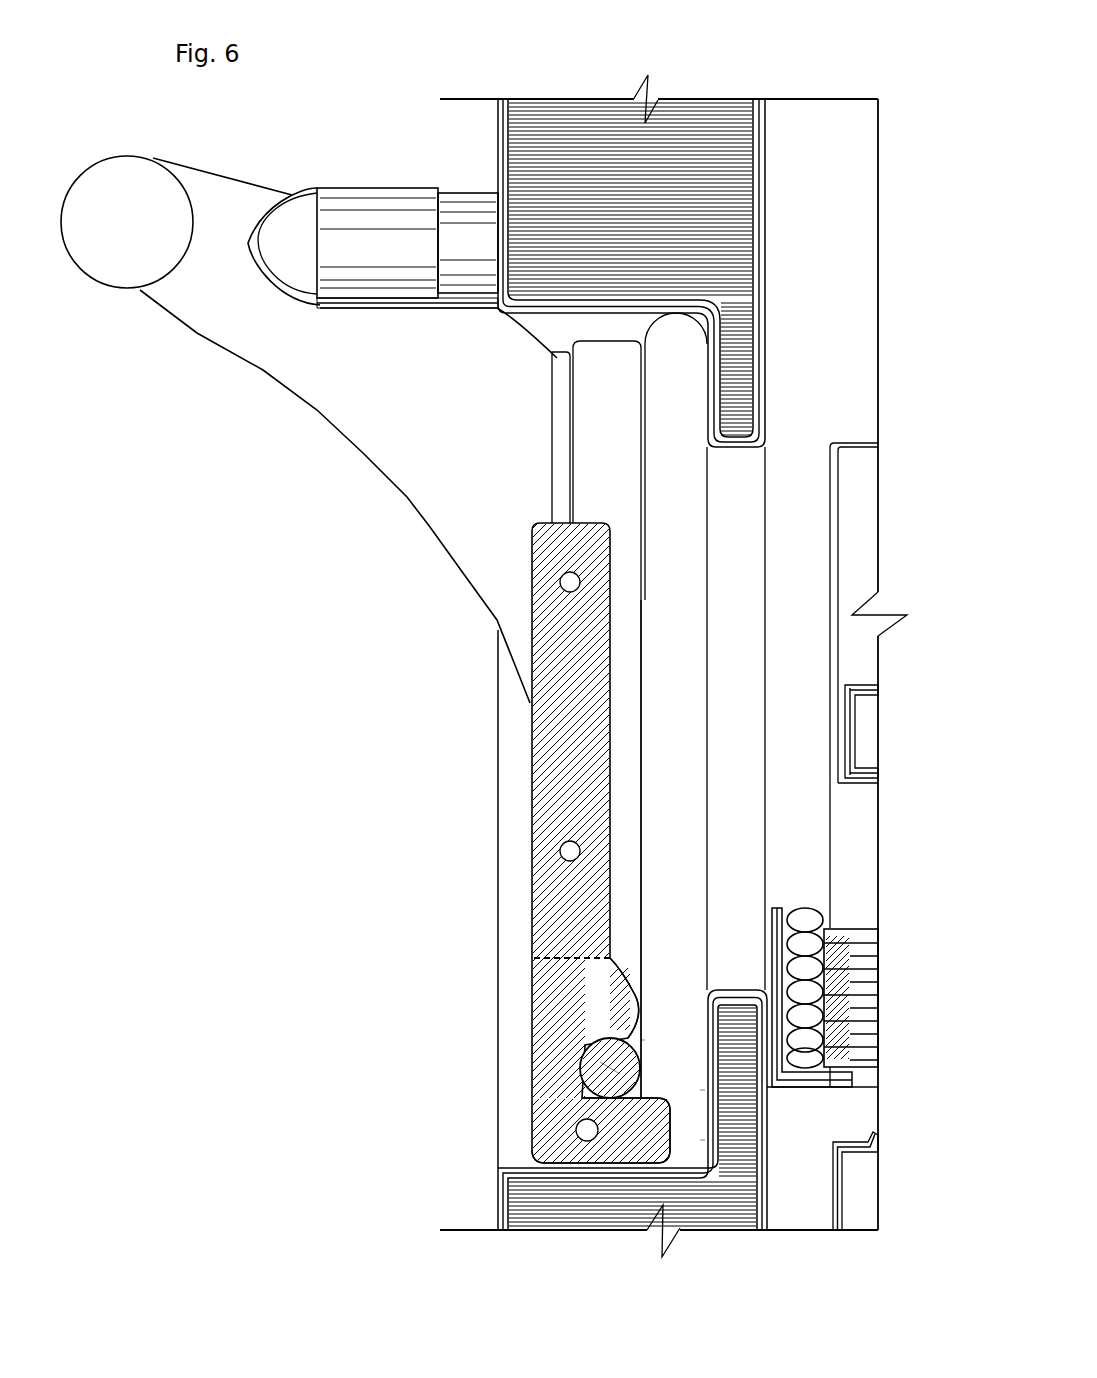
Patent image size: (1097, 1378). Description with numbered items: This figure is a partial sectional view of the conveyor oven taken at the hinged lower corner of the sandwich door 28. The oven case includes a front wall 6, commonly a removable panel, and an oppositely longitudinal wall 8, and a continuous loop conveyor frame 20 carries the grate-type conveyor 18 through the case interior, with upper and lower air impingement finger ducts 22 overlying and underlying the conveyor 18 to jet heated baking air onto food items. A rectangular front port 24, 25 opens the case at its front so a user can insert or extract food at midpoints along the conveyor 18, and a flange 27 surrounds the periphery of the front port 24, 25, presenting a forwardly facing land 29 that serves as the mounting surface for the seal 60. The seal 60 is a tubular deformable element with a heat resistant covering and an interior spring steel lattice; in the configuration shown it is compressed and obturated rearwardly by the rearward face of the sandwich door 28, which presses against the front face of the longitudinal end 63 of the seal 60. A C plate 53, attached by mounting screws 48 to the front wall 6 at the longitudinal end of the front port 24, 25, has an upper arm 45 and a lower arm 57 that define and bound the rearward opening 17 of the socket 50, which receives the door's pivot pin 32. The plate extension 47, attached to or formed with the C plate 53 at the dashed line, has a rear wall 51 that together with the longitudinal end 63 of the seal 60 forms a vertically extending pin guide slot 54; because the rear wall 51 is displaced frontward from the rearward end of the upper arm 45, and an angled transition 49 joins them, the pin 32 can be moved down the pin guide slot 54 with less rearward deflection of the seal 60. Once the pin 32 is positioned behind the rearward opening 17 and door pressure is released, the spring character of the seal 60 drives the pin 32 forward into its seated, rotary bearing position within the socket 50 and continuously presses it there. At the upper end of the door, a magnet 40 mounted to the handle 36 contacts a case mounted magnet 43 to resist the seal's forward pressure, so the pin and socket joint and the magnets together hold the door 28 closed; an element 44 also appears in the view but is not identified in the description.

The front wall 6 is at (673, 130).
The oppositely longitudinal wall 8 is at (848, 330).
The rearward opening 17 is at (635, 1037).
The conveyor 18 is at (838, 947).
The conveyor frame 20 is at (790, 1090).
The air impingement finger ducts 22 is at (866, 729).
The front port 24 is at (510, 857).
The front port 25 is at (740, 535).
The flange 27 is at (735, 440).
The sandwich door 28 is at (600, 447).
The land 29 is at (702, 1140).
The pivot pin 32 is at (612, 1083).
The handle 36 is at (325, 382).
The magnet 40 is at (380, 210).
The case mounted magnet 43 is at (472, 210).
The ball grip 44 is at (122, 183).
The upper arm 45 is at (612, 1023).
The plate extension 47 is at (563, 750).
The mounting screws 48 is at (573, 584).
The angled transition 49 is at (627, 982).
The socket 50 is at (617, 1080).
The rear wall 51 is at (613, 683).
The C plate 53 is at (553, 1075).
The pin guide slot 54 is at (628, 918).
The lower arm 57 is at (705, 1085).
The seal 60 is at (688, 410).
The longitudinal end 63 is at (693, 740).